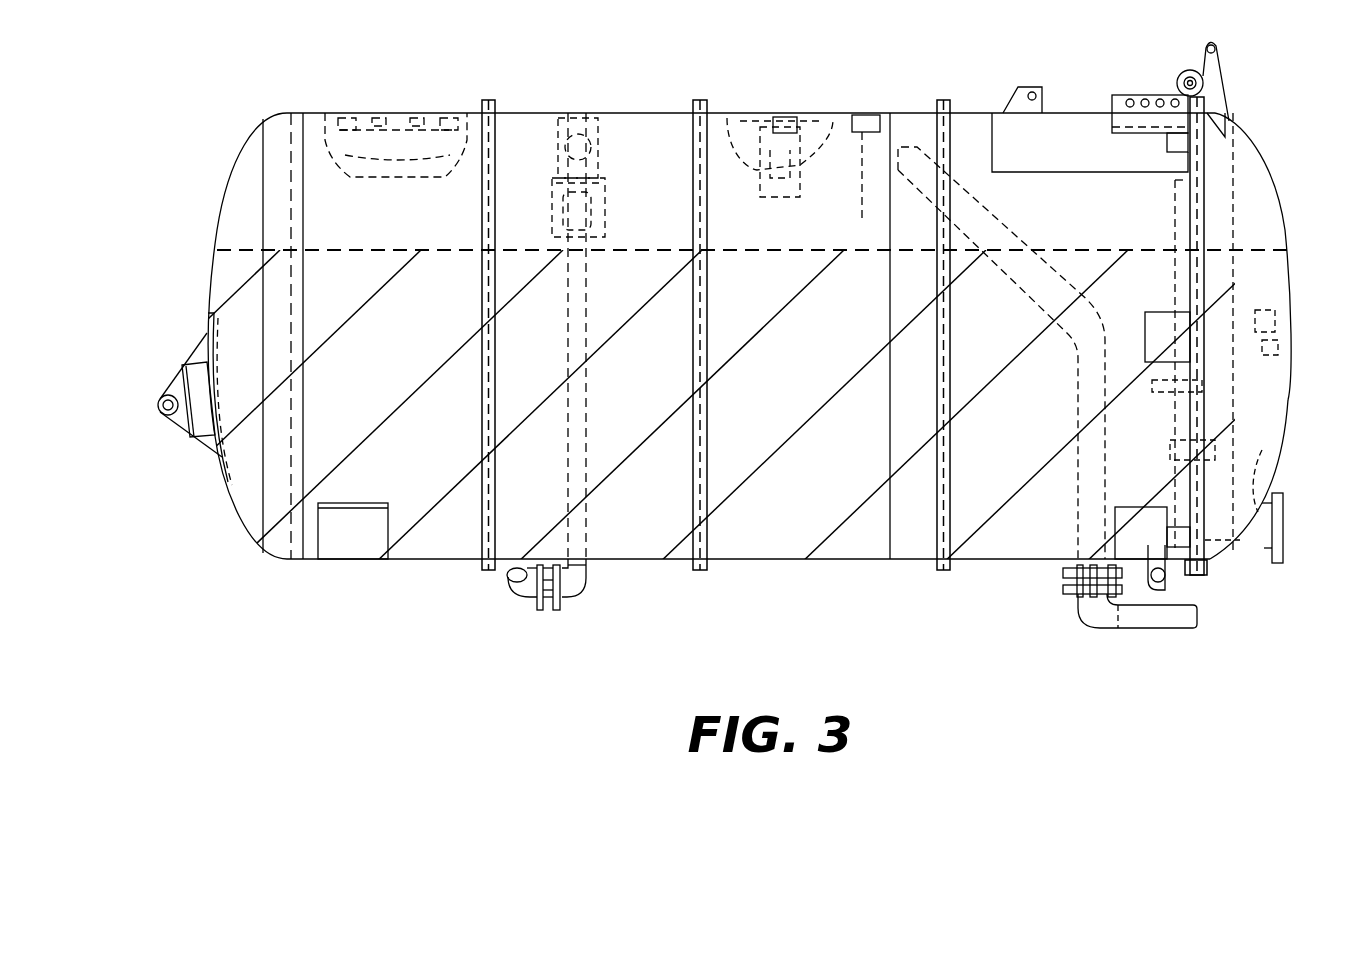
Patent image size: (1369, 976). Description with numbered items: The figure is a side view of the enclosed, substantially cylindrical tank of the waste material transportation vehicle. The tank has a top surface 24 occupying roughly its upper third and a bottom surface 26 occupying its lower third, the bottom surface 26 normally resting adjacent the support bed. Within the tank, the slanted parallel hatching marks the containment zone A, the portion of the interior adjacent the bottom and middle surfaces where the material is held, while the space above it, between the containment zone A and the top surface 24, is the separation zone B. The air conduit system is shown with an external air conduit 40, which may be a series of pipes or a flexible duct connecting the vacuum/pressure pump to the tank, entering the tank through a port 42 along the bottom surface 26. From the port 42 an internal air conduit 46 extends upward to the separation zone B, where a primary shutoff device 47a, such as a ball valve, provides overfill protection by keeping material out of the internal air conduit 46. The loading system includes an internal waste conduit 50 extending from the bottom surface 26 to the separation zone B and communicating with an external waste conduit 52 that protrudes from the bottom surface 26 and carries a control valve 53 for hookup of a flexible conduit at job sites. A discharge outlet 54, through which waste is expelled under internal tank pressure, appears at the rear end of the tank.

The top surface 24 is at (912, 112).
The bottom surface 26 is at (836, 562).
The external air conduit 40 is at (570, 596).
The port 42 is at (588, 565).
The internal air conduit 46 is at (587, 385).
The primary shutoff device 47a is at (598, 177).
The internal waste conduit 50 is at (1037, 258).
The external waste conduit 52 is at (1197, 612).
The control valve 53 is at (1063, 588).
The discharge outlet 54 is at (1283, 520).
The containment zone A is at (237, 282).
The separation zone B is at (644, 184).